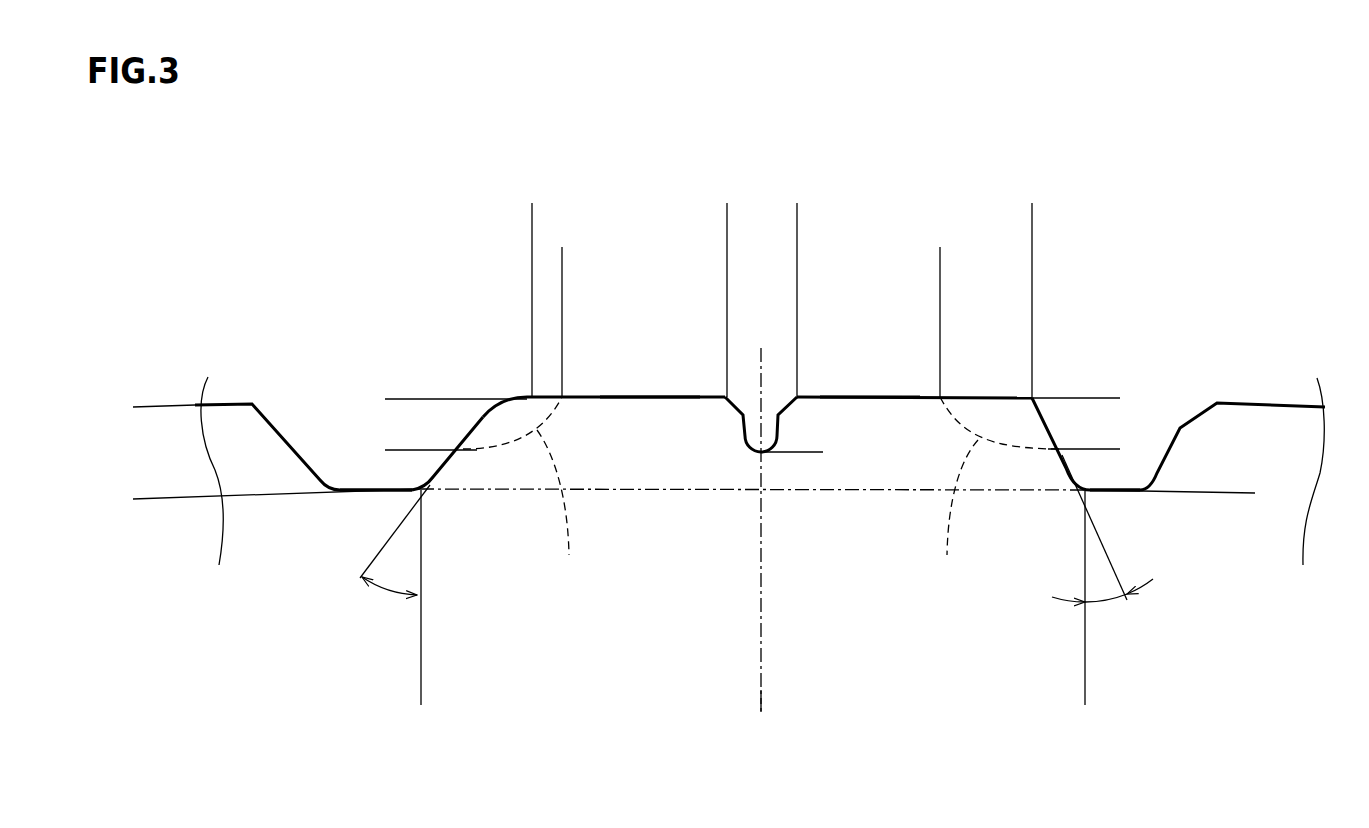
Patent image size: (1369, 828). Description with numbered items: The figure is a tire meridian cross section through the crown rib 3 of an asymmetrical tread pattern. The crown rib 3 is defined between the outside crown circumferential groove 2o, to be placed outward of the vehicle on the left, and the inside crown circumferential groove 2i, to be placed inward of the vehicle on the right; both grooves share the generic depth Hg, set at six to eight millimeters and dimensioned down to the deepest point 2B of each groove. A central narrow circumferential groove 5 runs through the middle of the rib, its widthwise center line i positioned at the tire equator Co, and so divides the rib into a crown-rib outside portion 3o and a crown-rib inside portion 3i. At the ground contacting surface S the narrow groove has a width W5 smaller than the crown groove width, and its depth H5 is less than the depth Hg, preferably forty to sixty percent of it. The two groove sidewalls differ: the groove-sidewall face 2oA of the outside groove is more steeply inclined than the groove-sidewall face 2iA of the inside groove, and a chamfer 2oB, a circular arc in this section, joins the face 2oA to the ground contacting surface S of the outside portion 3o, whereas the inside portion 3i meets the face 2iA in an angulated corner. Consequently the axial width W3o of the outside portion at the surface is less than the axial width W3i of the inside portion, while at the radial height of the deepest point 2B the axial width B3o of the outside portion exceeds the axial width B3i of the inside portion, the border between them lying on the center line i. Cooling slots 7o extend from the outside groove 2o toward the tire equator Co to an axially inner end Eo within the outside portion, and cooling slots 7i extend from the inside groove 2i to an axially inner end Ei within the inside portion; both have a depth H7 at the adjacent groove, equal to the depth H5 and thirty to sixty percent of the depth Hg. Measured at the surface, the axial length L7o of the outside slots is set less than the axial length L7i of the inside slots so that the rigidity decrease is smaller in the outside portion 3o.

The crown rib 3 is at (949, 172).
The central narrow circumferential groove 5 is at (752, 383).
The outside crown circumferential groove 2o is at (305, 387).
The inside crown circumferential groove 2i is at (1177, 383).
The groove-sidewall face 2oA is at (441, 475).
The chamfer 2oB is at (490, 402).
The groove-sidewall face 2iA is at (1043, 428).
The deepest point 2B is at (375, 491).
The crown-rib outside portion 3o is at (660, 397).
The crown-rib inside portion 3i is at (853, 397).
The cooling slots 7o is at (522, 493).
The cooling slots 7i is at (998, 492).
The axially inner end Eo is at (567, 393).
The axially inner end Ei is at (934, 392).
The ground contacting surface S is at (231, 404).
The widthwise center line i is at (761, 592).
The tire equator Co is at (761, 715).
The axial width W3o is at (727, 209).
The width W5 is at (797, 209).
The axial width W3i is at (1032, 209).
The axial length L7o is at (595, 252).
The axial length L7i is at (1032, 252).
The depth H7 is at (390, 370).
The depth H5 is at (818, 365).
The depth Hg is at (138, 407).
The axial width B3o is at (761, 700).
The axial width B3i is at (1085, 700).